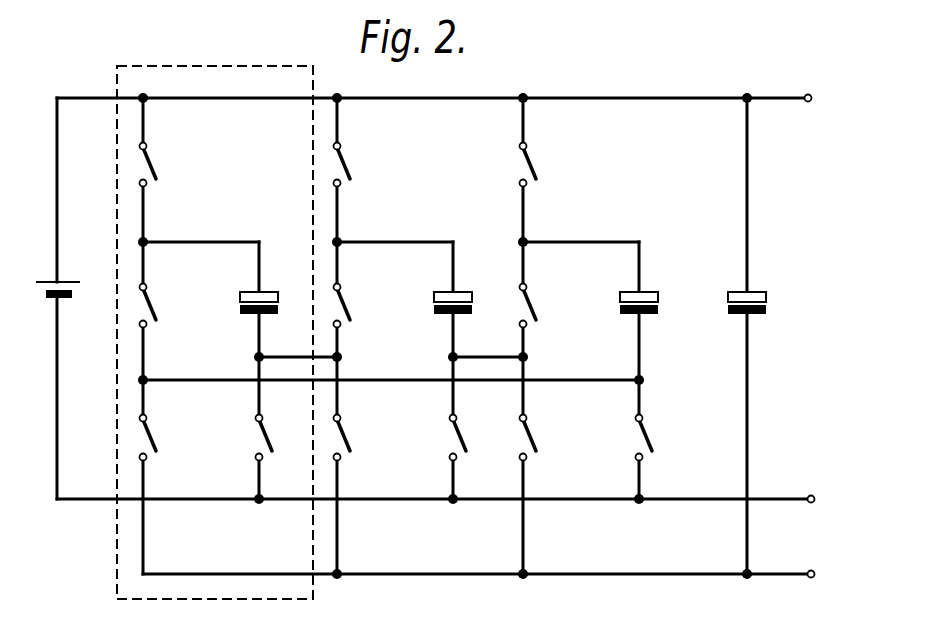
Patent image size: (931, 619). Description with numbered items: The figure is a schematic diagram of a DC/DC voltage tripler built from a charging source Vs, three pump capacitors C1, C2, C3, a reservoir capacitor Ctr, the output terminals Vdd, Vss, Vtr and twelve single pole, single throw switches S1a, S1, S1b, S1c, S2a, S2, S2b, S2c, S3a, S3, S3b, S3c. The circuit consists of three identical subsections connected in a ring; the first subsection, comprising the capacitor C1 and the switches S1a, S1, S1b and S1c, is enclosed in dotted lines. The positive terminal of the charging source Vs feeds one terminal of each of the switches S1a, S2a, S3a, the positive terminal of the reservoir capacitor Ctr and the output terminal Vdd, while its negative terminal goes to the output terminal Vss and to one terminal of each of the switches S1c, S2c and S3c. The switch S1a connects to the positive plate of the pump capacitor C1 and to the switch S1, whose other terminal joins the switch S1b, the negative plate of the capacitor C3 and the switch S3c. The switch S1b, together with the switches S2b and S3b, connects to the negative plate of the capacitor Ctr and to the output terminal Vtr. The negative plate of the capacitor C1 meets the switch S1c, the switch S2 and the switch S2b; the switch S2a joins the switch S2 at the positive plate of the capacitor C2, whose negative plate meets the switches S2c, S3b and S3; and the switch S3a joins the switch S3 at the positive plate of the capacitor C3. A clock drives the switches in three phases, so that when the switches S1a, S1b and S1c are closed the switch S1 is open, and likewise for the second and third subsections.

The output terminal Vdd is at (459, 97).
The output terminal Vss is at (457, 498).
The output terminal Vtr is at (498, 573).
The charging source Vs is at (67, 282).
The switch S1a is at (152, 160).
The switch S1 is at (152, 303).
The switch S1b is at (152, 433).
The switch S1c is at (290, 432).
The pump capacitor C1 is at (268, 292).
The switch S2a is at (346, 160).
The switch S2 is at (346, 303).
The switch S2b is at (346, 433).
The switch S2c is at (487, 433).
The pump capacitor C2 is at (462, 292).
The switch S3a is at (532, 160).
The switch S3 is at (532, 303).
The switch S3b is at (532, 433).
The switch S3c is at (649, 434).
The pump capacitor C3 is at (648, 292).
The reservoir capacitor Ctr is at (756, 292).